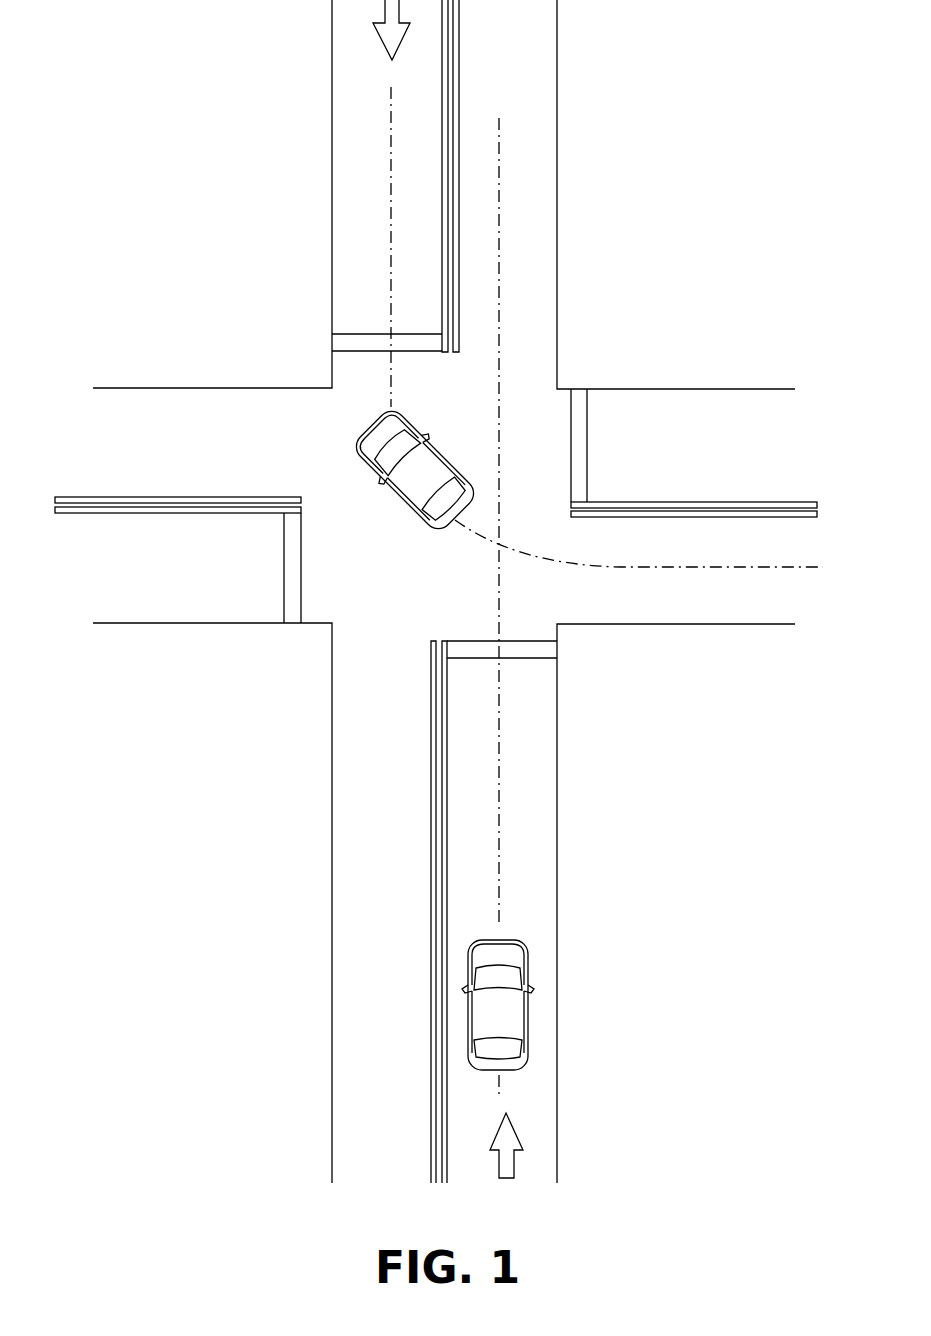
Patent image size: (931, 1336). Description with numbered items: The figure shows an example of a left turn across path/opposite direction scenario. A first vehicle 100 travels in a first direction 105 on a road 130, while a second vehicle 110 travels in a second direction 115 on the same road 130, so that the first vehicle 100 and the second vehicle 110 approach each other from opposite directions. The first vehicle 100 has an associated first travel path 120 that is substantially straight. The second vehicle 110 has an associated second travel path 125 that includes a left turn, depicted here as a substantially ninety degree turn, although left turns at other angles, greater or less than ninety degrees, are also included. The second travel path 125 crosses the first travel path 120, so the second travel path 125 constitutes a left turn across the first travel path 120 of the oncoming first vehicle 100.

The first vehicle 100 is at (527, 1005).
The first direction 105 is at (514, 1162).
The second vehicle 110 is at (373, 413).
The second direction 115 is at (385, 12).
The first travel path 120 is at (499, 797).
The second travel path 125 is at (618, 568).
The road 130 is at (327, 778).